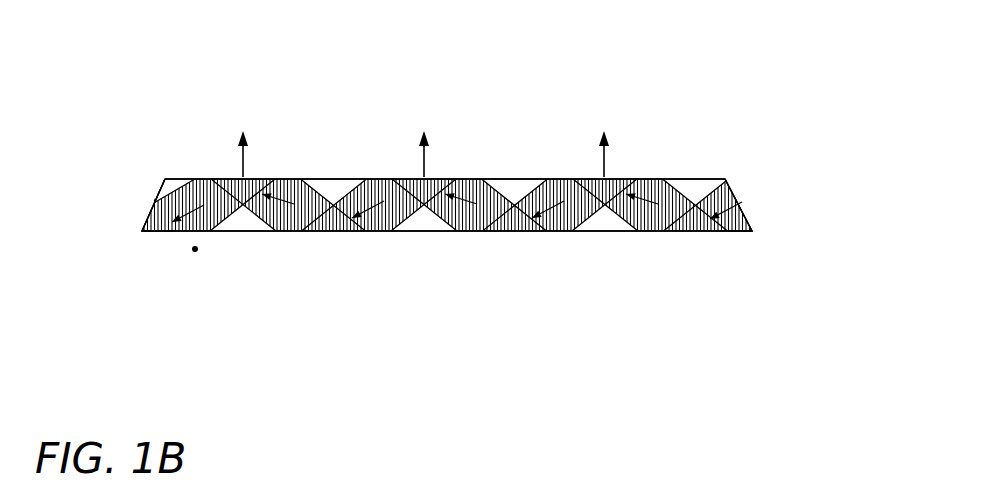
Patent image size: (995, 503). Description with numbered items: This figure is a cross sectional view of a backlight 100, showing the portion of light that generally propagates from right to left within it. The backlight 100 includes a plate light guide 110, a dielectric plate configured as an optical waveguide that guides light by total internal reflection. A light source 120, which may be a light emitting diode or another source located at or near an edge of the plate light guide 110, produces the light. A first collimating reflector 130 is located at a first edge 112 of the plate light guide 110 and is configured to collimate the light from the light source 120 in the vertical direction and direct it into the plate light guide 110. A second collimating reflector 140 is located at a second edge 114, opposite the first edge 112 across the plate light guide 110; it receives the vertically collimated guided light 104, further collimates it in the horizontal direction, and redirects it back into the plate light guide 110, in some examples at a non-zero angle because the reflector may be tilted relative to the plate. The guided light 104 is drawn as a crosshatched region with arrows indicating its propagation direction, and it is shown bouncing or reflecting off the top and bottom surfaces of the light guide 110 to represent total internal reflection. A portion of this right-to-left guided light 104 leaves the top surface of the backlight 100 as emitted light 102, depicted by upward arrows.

The backlight 100 is at (740, 55).
The emitted light 102 is at (236, 129).
The guided light 104 is at (579, 231).
The plate light guide 110 is at (671, 183).
The first edge 112 is at (122, 238).
The second edge 114 is at (783, 238).
The light source 120 is at (198, 252).
The first collimating reflector 130 is at (155, 195).
The second collimating reflector 140 is at (744, 196).